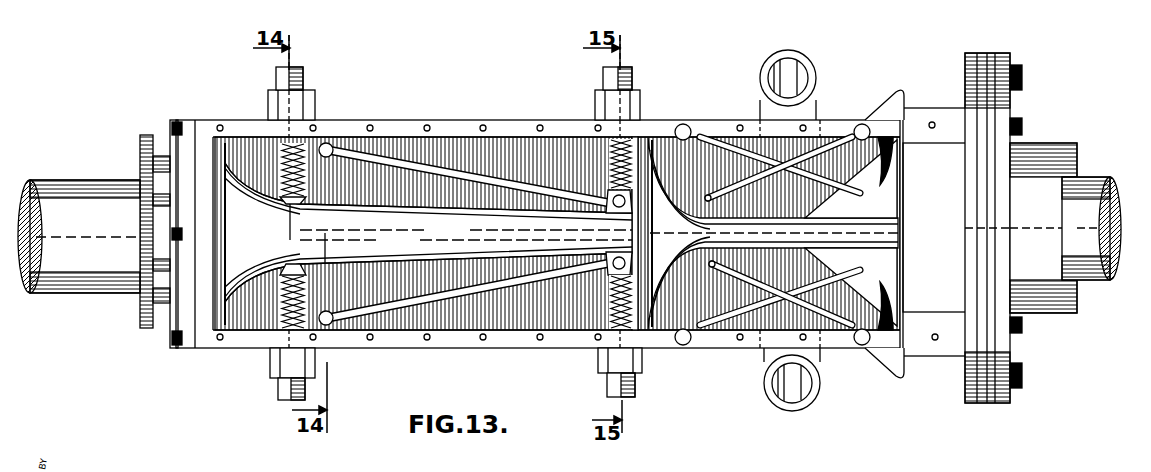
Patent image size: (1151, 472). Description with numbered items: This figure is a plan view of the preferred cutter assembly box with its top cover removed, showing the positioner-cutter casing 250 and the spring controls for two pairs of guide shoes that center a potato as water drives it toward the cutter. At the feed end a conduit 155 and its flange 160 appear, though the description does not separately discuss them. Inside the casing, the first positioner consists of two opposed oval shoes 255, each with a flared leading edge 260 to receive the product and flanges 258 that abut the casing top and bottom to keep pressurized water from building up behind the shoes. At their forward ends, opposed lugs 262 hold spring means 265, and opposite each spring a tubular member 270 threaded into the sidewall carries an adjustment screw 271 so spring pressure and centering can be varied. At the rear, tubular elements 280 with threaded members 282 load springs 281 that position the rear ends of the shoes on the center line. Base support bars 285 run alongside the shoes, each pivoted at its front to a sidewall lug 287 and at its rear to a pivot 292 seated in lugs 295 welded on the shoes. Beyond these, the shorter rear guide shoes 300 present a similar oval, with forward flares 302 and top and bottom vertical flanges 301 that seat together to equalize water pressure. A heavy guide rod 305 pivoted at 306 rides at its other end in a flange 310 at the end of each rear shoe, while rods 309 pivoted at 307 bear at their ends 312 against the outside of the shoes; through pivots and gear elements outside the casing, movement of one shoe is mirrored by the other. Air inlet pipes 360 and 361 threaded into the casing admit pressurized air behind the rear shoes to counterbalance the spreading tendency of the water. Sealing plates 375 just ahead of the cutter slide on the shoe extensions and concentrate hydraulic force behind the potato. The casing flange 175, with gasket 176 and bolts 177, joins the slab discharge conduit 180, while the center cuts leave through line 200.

The input shaft 155 is at (78, 182).
The input flange 160 is at (147, 134).
The flange 175 is at (975, 54).
The gasket 176 is at (992, 54).
The bolts 177 is at (1022, 80).
The discharge conduit 180 is at (1050, 142).
The discharge line for center cuts 200 is at (1095, 177).
The main casing 250 is at (456, 120).
The positioning shoes 255 is at (322, 203).
The flanges 258 is at (464, 228).
The flared leading edge 260 is at (233, 180).
The lugs 262 is at (305, 193).
The spring means 265 is at (282, 150).
The tubular member 270 is at (315, 104).
The adjustment screw 271 is at (305, 80).
The tubular elements 280 is at (641, 110).
The springs 281 is at (612, 158).
The threaded member 282 is at (633, 80).
The base support bars 285 is at (470, 170).
The lug 287 is at (343, 148).
The pivot 292 is at (652, 233).
The lugs 295 is at (628, 192).
The rear guide shoes 300 is at (826, 216).
The vertical flanges 301 is at (730, 228).
The tapers or flares 302 is at (674, 233).
The guide rod 305 is at (725, 155).
The pivot 306 is at (688, 127).
The pivot 307 is at (862, 125).
The rod members 309 is at (752, 189).
The flanges 310 is at (874, 210).
The rod end 312 is at (708, 196).
The air inlet pipe 360 is at (814, 67).
The air inlet pipe 361 is at (821, 396).
The plates 375 is at (884, 164).